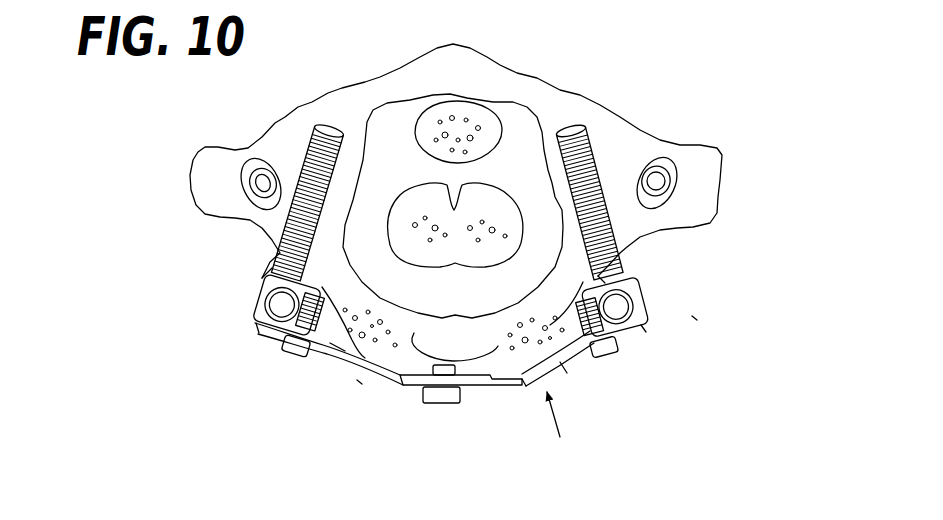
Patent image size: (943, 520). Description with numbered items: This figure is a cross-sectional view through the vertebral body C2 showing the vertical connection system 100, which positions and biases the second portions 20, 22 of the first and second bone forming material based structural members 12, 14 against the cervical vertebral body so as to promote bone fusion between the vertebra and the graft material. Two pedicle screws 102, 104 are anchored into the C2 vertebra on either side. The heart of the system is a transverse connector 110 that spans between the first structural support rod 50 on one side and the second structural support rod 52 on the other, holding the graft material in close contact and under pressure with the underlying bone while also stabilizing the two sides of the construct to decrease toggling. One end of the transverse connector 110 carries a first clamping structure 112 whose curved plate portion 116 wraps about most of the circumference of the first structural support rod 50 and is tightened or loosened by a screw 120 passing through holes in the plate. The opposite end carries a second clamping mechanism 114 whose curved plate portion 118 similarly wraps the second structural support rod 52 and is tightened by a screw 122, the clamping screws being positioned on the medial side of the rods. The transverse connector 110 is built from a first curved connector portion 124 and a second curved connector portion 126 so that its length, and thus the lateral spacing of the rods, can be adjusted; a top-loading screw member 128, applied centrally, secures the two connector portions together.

The vertebral body C2 is at (626, 141).
The pedicle screw 102 is at (306, 179).
The pedicle screw 104 is at (620, 283).
The first structural support rod 50 is at (278, 308).
The second structural support rod 52 is at (622, 308).
The first clamping structure 112 is at (242, 300).
The second clamping mechanism 114 is at (655, 287).
The curved plate portion 116 is at (257, 324).
The curved plate portion 118 is at (641, 325).
The screw 120 is at (293, 353).
The screw 122 is at (612, 350).
The transverse connector 110 is at (328, 345).
The first curved connector portion 124 is at (357, 382).
The second curved connector portion 126 is at (567, 373).
The first bone forming material based structural member 12 is at (360, 373).
The second bone forming material based structural member 14 is at (566, 349).
The second portion of first structural member 20 is at (397, 333).
The second portion of second structural member 22 is at (528, 380).
The top-loading screw member 128 is at (447, 403).
The vertical connection system 100 is at (697, 320).